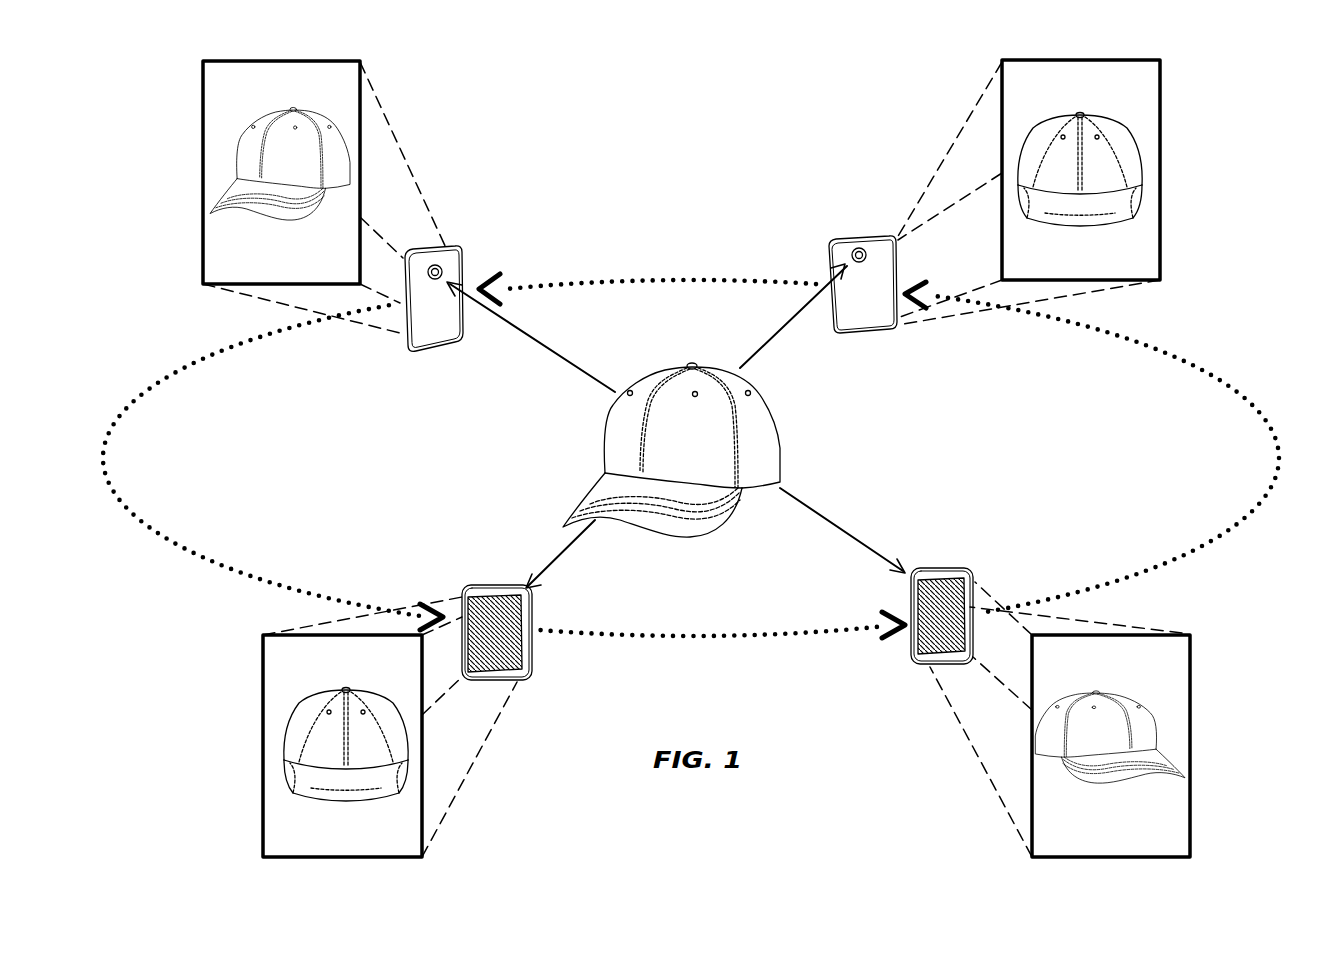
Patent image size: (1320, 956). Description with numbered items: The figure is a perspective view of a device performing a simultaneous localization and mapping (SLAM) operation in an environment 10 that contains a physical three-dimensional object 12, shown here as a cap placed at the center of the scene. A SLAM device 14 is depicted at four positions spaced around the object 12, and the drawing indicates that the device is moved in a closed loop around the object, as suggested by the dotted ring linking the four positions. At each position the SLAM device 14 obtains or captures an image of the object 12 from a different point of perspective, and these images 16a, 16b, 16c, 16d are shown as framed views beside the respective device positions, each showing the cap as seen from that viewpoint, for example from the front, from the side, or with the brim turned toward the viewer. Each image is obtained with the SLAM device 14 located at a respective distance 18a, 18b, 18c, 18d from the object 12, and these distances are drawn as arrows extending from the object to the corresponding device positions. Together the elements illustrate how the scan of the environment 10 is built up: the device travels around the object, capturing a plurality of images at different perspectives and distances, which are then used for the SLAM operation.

The environment 10 is at (677, 61).
The physical three-dimensional object 12 is at (758, 415).
The SLAM device 14 is at (442, 320).
The image 16a is at (275, 687).
The image 16b is at (1173, 667).
The image 16c is at (1062, 73).
The image 16d is at (270, 72).
The distance 18a is at (575, 543).
The distance 18b is at (817, 520).
The distance 18c is at (767, 342).
The distance 18d is at (567, 350).